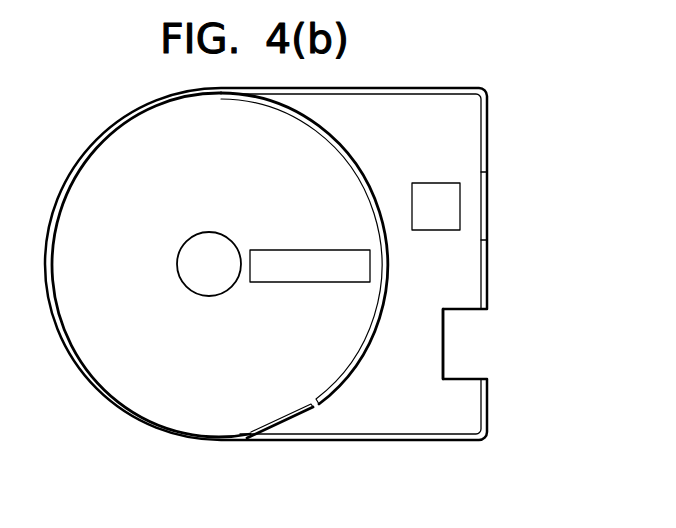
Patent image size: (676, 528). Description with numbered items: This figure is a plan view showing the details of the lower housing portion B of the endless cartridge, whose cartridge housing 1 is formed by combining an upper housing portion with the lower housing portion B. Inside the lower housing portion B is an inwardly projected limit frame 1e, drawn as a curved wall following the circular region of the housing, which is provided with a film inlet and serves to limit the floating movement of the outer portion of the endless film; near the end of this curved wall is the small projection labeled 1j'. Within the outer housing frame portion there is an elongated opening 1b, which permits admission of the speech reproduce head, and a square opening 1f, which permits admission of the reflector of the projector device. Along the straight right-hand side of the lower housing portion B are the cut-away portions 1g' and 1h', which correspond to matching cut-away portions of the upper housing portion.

The cartridge housing 1 is at (488, 94).
The opening 1b is at (284, 283).
The limit frame 1e is at (352, 372).
The opening 1f is at (437, 190).
The cut-away portion 1g' is at (518, 206).
The cut-away portion 1h' is at (497, 344).
The projection 1j' is at (309, 419).
The lower housing portion B is at (440, 416).